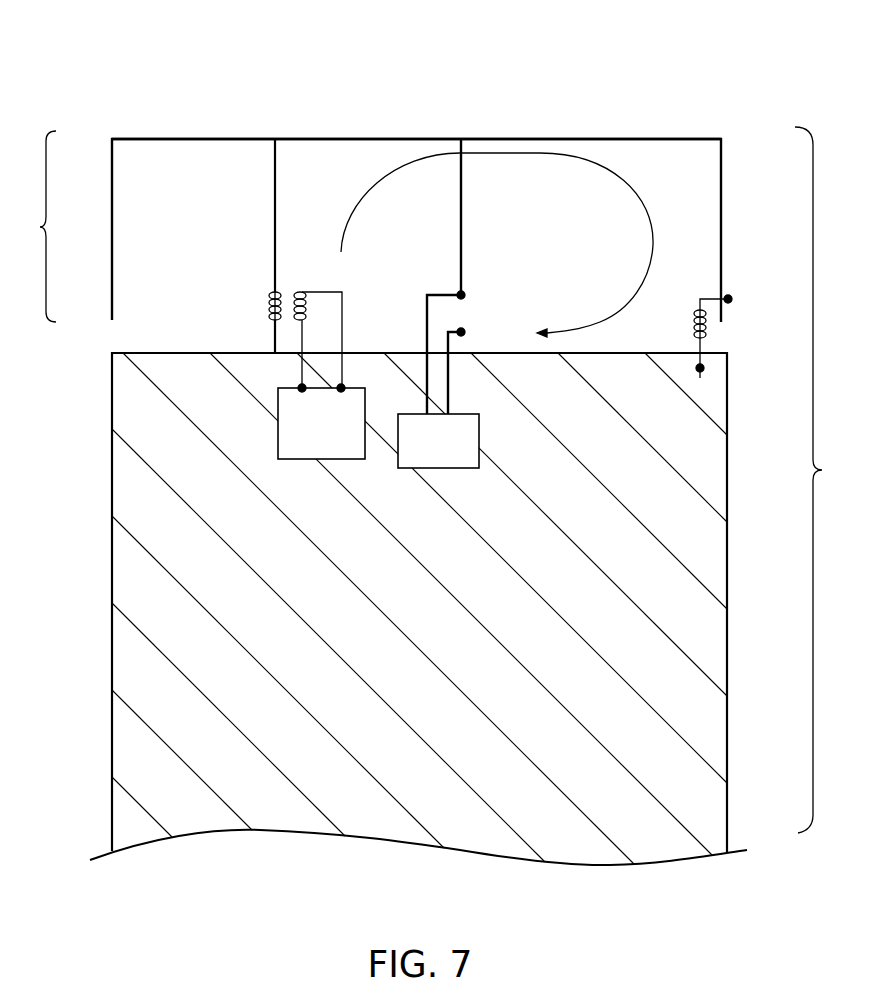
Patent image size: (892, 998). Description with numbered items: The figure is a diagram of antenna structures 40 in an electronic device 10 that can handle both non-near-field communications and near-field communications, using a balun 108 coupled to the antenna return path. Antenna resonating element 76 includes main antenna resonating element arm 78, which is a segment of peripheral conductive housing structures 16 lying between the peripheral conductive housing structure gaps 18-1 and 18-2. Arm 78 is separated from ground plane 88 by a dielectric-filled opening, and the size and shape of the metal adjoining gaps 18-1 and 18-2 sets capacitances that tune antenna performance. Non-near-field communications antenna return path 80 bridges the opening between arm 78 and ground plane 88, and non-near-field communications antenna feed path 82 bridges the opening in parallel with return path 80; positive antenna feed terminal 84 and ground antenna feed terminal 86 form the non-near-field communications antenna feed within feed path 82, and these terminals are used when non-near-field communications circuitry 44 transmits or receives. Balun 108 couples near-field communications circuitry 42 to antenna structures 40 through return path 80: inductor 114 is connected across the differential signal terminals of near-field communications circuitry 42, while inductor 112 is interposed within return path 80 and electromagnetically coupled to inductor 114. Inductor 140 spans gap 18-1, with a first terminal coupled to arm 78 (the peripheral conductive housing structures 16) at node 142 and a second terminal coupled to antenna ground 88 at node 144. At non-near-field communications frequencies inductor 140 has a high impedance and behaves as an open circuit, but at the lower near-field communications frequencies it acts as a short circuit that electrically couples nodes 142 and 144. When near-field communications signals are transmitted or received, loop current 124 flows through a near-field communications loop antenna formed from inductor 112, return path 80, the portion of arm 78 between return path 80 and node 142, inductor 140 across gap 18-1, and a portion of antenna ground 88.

The electronic device 10 is at (827, 480).
The peripheral conductive housing structures 16 is at (656, 115).
The gap 18-1 is at (737, 341).
The gap 18-2 is at (103, 333).
The antenna structures 40 is at (401, 172).
The near-field communications circuitry 42 is at (320, 459).
The non-near-field communications circuitry 44 is at (433, 468).
The antenna resonating element 76 is at (31, 226).
The main antenna resonating element arm 78 is at (503, 138).
The non-near-field communications antenna return path 80 is at (275, 195).
The non-near-field communications antenna feed path 82 is at (483, 261).
The positive antenna feed terminal 84 is at (465, 294).
The ground antenna feed terminal 86 is at (464, 331).
The ground plane 88 is at (118, 503).
The balun 108 is at (268, 293).
The inductor 112 is at (268, 306).
The inductor 114 is at (288, 293).
The loop current 124 is at (638, 206).
The inductor 140 is at (678, 333).
The node 142 is at (729, 298).
The node 144 is at (700, 372).